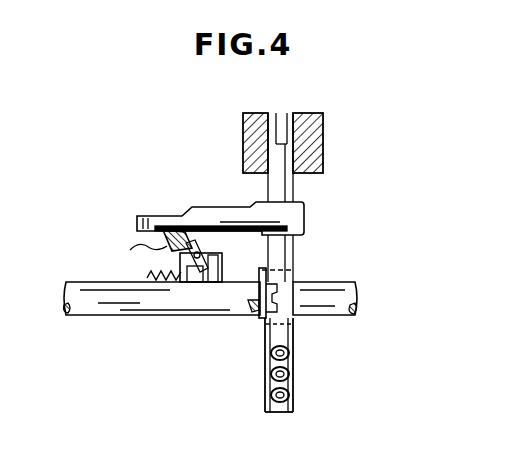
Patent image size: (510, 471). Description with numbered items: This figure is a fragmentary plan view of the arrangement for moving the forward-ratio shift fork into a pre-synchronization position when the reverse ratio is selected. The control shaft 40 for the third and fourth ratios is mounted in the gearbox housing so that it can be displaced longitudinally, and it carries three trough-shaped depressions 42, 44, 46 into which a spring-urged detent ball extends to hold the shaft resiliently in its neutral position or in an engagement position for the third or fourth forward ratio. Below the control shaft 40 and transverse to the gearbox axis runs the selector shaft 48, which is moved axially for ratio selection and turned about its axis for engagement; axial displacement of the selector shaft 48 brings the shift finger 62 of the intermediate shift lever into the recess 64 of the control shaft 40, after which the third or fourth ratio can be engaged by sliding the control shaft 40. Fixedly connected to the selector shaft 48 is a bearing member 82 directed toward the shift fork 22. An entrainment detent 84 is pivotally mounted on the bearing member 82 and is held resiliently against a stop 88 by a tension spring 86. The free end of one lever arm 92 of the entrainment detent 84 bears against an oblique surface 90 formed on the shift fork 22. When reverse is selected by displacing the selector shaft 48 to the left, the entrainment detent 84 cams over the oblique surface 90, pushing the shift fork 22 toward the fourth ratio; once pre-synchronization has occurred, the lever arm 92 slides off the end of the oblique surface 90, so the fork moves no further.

The 3-4 control shaft 40 is at (276, 135).
The shift fork 22 is at (196, 215).
The entrainment detent 84 is at (208, 250).
The oblique surface 90 is at (172, 242).
The lever arm 92 is at (140, 248).
The bearing member 82 is at (222, 253).
The tension spring 86 is at (147, 275).
The selector shaft 48 is at (352, 298).
The recess 64 is at (280, 290).
The shift finger 62 is at (255, 305).
The stop 88 is at (190, 262).
The trough-shaped depression 44 is at (264, 386).
The trough-shaped depression 42 is at (291, 352).
The trough-shaped depression 46 is at (291, 396).